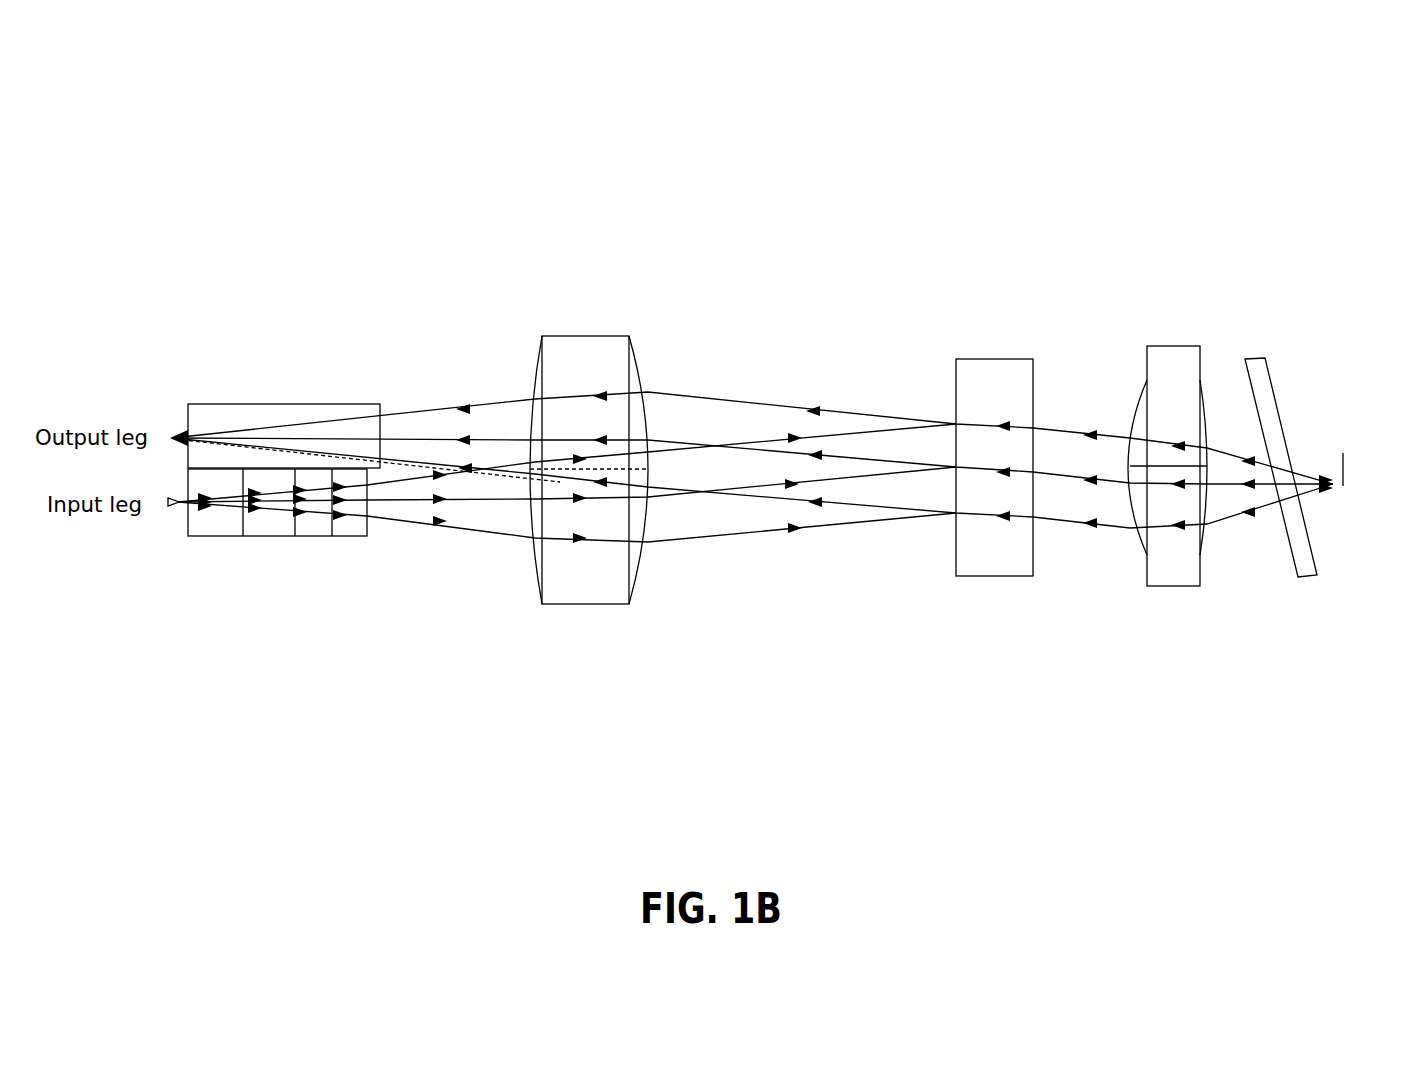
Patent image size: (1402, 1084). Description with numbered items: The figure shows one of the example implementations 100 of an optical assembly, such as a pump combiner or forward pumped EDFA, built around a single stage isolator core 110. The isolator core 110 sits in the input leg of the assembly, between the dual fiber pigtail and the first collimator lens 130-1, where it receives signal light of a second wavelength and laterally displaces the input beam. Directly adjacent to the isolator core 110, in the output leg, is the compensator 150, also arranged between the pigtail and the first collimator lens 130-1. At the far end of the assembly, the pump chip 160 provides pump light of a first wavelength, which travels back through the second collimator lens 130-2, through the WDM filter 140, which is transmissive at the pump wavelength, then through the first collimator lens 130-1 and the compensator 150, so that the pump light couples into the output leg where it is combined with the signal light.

The example implementations 100 is at (176, 96).
The isolator core 110 is at (275, 560).
The first collimator lens 130-1 is at (590, 312).
The second collimator lens 130-2 is at (1173, 326).
The WDM filter 140 is at (997, 338).
The compensator 150 is at (279, 388).
The pump chip 160 is at (1334, 458).